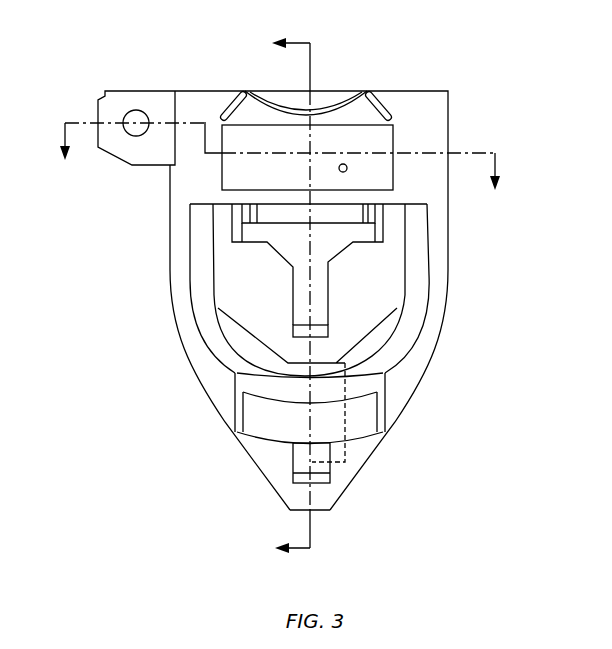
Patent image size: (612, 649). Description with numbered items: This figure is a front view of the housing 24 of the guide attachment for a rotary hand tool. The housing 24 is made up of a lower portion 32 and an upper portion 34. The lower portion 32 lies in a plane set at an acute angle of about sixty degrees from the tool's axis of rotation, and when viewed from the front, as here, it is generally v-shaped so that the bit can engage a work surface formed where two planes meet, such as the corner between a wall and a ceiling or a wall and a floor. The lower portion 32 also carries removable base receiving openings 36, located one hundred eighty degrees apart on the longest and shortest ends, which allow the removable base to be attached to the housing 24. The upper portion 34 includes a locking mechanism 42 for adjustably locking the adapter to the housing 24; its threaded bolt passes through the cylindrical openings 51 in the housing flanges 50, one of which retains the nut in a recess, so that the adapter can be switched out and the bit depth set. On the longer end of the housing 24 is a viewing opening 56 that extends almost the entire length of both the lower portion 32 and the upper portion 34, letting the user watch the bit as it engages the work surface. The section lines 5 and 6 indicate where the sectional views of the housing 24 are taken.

The nozzle body 24 is at (473, 301).
The nozzle tip 32 is at (328, 493).
The upper mounting block 34 is at (423, 107).
The nozzle insert 36 is at (297, 311).
The nozzle assembly 42 is at (97, 173).
The mounting tab 50 is at (112, 110).
The mounting hole 51 is at (137, 117).
The cavity 56 is at (228, 263).
The section line 5- 5 is at (277, 296).
The section line 6- 6 is at (278, 156).